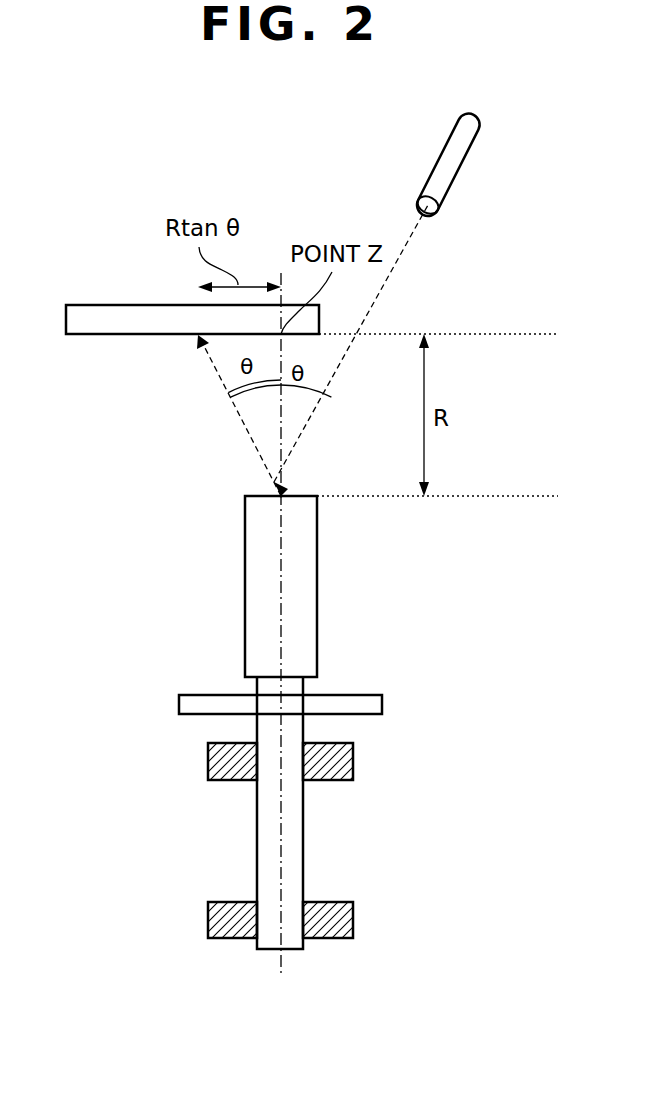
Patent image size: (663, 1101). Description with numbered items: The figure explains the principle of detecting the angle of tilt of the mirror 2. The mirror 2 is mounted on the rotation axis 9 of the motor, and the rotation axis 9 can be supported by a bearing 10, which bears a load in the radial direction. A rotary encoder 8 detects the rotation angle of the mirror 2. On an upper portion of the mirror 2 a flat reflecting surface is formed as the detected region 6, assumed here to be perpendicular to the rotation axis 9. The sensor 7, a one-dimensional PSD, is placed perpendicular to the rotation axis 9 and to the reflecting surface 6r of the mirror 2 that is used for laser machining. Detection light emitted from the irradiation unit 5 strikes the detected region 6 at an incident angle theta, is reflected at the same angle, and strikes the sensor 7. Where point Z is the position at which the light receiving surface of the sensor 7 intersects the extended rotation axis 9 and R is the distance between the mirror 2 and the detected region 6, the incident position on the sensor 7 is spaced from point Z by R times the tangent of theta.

The mirror 2 is at (317, 570).
The irradiation unit 5 is at (452, 165).
The detected region 6 is at (281, 495).
The reflecting surface 6r is at (245, 575).
The sensor 7 is at (82, 303).
The rotary encoder 8 is at (382, 697).
The rotation axis 9 is at (272, 831).
The bearing 10 is at (338, 922).